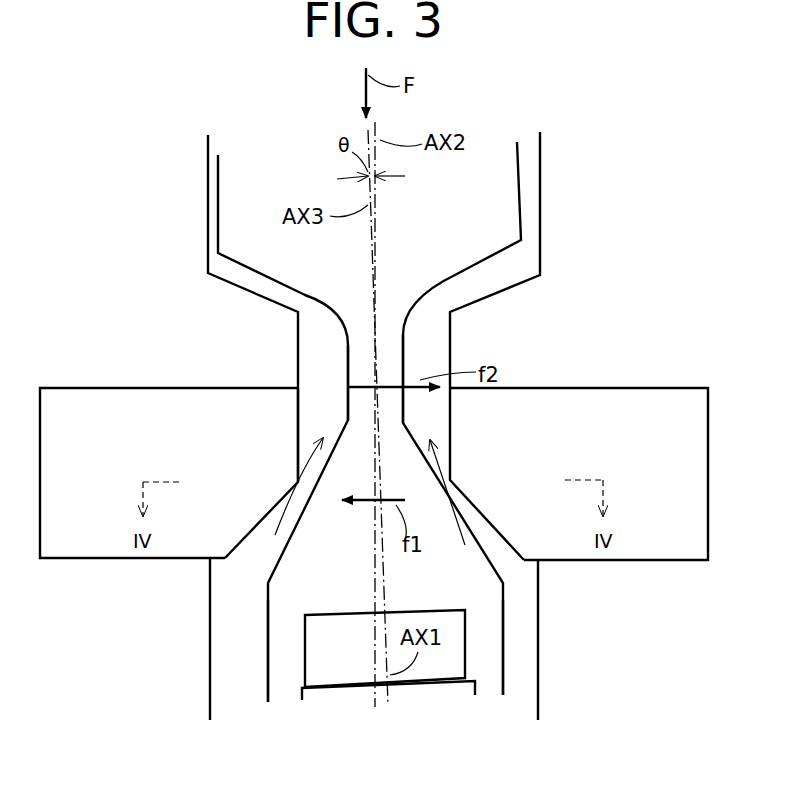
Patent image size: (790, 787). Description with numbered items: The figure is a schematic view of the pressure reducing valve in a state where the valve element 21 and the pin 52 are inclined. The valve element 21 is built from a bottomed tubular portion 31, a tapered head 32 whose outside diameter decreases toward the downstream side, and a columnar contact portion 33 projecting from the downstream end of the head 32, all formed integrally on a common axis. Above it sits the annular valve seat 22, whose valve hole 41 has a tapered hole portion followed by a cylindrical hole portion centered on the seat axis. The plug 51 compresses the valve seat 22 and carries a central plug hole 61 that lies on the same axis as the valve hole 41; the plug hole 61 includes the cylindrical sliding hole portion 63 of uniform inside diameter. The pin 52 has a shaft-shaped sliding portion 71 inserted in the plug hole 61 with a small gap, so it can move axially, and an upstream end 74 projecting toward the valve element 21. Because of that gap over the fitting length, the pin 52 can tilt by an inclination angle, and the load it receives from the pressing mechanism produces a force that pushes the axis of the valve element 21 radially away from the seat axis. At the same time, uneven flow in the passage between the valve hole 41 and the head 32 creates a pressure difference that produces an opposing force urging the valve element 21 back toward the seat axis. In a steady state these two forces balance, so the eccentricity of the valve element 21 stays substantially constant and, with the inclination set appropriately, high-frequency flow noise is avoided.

The valve element 21 is at (268, 625).
The valve seat 22 is at (72, 545).
The tubular portion 31 is at (495, 650).
The head 32 is at (465, 545).
The contact portion 33 is at (390, 400).
The valve hole 41 is at (300, 410).
The plug 51 is at (540, 132).
The pin 52 is at (208, 190).
The plug hole 61 is at (526, 418).
The sliding hole portion 63 is at (541, 215).
The sliding portion 71 is at (237, 218).
The upstream end 74 is at (362, 348).